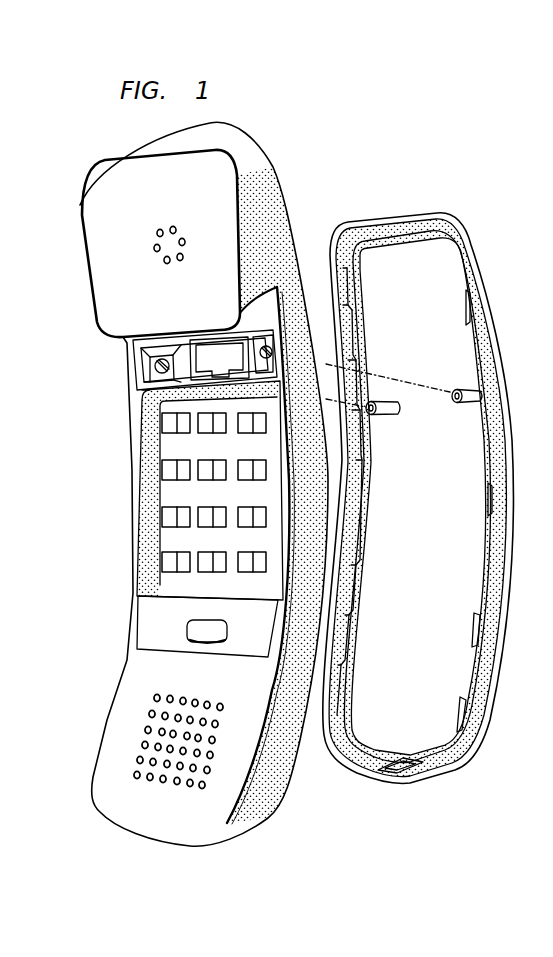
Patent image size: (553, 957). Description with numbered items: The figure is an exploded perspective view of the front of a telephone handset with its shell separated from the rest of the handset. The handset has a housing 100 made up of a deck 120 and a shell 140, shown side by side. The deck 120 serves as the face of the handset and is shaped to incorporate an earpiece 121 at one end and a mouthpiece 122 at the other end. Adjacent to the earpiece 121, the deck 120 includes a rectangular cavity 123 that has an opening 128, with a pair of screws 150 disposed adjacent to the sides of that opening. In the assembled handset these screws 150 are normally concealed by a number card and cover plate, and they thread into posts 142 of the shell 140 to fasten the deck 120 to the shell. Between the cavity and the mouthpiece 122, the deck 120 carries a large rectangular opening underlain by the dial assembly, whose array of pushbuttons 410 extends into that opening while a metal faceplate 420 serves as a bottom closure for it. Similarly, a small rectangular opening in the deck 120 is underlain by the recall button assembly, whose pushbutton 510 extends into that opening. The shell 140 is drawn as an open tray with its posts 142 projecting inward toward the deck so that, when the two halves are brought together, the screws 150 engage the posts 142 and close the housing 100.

The housing 100 is at (478, 768).
The deck 120 is at (270, 200).
The earpiece 121 is at (112, 280).
The mouthpiece 122 is at (130, 675).
The rectangular cavity 123 is at (142, 349).
The screws 150 is at (153, 363).
The opening 128 is at (207, 362).
The pushbuttons 410 is at (170, 467).
The metal faceplate 420 is at (157, 488).
The pushbutton 510 is at (193, 631).
The shell 140 is at (532, 293).
The posts 142 is at (460, 405).